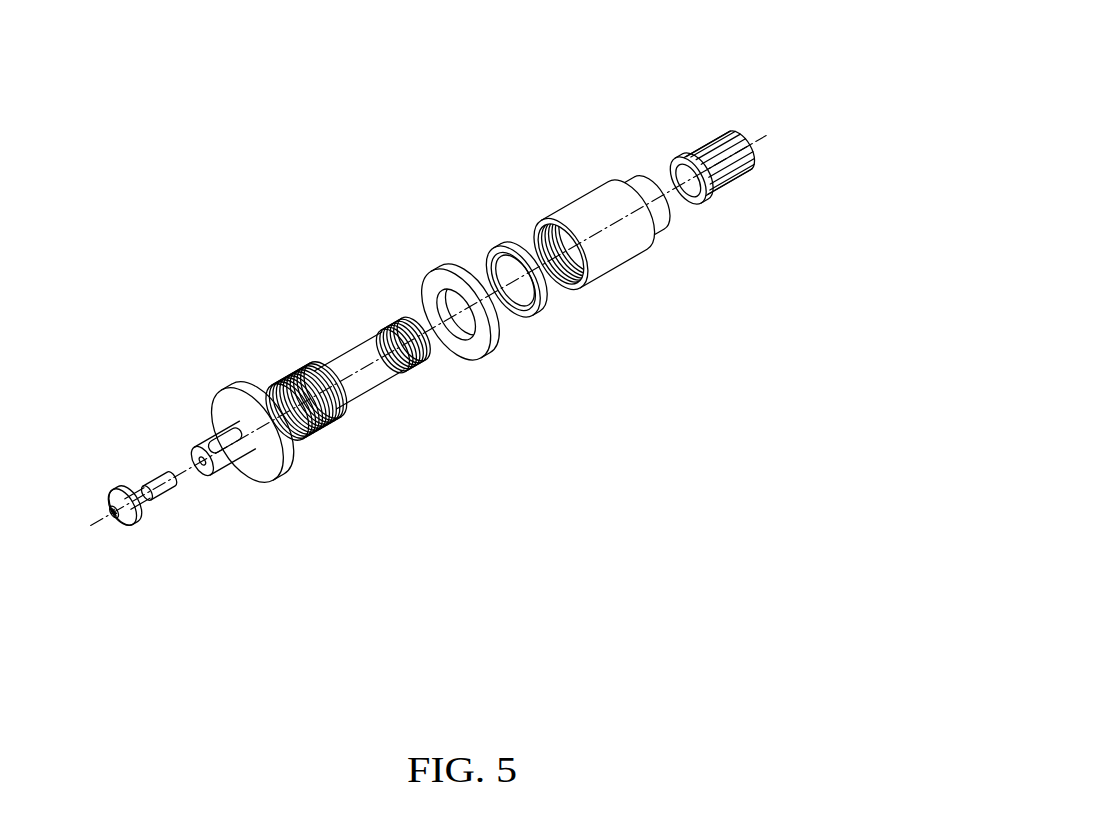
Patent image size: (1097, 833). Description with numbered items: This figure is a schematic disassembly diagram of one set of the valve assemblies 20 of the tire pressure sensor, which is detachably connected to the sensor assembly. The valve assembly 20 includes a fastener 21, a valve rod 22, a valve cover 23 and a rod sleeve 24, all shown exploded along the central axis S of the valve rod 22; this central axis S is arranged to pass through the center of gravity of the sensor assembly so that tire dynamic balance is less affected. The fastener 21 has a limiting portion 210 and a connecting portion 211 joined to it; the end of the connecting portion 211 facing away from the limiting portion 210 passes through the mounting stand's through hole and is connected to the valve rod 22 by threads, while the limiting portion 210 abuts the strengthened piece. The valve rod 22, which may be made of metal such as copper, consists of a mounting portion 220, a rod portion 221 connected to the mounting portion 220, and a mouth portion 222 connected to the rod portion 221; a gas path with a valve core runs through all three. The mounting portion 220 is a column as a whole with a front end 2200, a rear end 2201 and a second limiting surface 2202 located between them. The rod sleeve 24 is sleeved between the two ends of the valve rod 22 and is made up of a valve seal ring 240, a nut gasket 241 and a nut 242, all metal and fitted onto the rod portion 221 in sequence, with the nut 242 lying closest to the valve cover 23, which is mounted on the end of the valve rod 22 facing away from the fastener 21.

The valve assembly 20 is at (677, 58).
The central axis S is at (772, 131).
The fastener 21 is at (169, 542).
The limiting portion 210 is at (130, 527).
The connecting portion 211 is at (155, 487).
The valve rod 22 is at (353, 433).
The mounting portion 220 is at (286, 455).
The front end 2200 is at (213, 472).
The rear end 2201 is at (302, 432).
The second limiting surface 2202 is at (271, 479).
The rod portion 221 is at (350, 377).
The mouth portion 222 is at (441, 377).
The valve cover 23 is at (740, 175).
The rod sleeve 24 is at (571, 305).
The valve seal ring 240 is at (497, 343).
The nut gasket 241 is at (540, 303).
The nut 242 is at (625, 246).